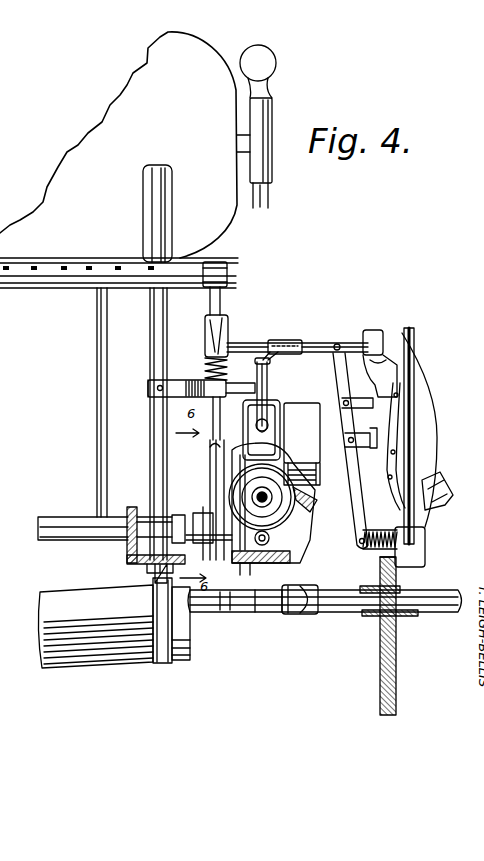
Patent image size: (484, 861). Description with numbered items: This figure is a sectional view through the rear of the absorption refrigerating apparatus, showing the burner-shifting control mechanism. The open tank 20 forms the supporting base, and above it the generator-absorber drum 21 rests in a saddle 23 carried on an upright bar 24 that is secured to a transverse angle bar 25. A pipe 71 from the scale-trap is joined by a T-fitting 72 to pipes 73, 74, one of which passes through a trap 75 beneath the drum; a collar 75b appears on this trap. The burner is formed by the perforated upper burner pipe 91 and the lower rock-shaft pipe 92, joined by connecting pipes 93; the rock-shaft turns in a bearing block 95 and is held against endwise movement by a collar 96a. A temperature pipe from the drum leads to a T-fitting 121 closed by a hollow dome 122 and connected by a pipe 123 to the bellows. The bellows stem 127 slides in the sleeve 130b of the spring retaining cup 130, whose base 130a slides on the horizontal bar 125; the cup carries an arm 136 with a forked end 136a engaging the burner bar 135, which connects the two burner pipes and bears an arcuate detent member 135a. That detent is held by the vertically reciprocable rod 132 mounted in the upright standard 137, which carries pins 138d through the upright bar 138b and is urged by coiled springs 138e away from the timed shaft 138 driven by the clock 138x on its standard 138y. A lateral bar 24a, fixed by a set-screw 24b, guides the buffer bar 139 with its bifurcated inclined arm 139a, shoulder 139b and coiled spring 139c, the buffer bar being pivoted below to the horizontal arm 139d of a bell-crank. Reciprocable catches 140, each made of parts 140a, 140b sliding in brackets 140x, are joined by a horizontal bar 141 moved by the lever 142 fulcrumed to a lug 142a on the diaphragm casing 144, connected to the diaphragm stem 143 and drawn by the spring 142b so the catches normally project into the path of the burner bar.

The open tank 20 is at (403, 669).
The generator-absorber drum 21 is at (125, 145).
The saddle 23 is at (143, 184).
The upright bar 24 is at (150, 298).
The laterally extending bar 24a is at (192, 383).
The set-screw 24b is at (130, 383).
The angle bar 25 is at (127, 557).
The pipe 71 is at (452, 600).
The T-fitting 72 is at (296, 614).
The pipe 73 is at (267, 612).
The pipe 74 is at (243, 612).
The trap 75 is at (35, 637).
The spindle collar 75b is at (158, 666).
The burner pipe 91 is at (60, 277).
The rock-shaft pipe 92 is at (53, 512).
The connecting pipe 93 is at (97, 318).
The bearing block 95 is at (143, 509).
The collar 96a is at (177, 520).
The T-fitting 121 is at (263, 107).
The hollow dome 122 is at (267, 67).
The pipe 123 is at (262, 193).
The horizontal bar 125 is at (270, 560).
The horizontal stem 127 is at (266, 500).
The spring retaining cup 130 is at (298, 512).
The cup base 130a is at (293, 563).
The sleeve 130b is at (285, 528).
The vertically reciprocable rod 132 is at (262, 342).
The burner bar 135 is at (230, 288).
The arcuate detent member 135a is at (300, 347).
The arm 136 is at (297, 490).
The forked end 136a is at (212, 446).
The upright standard 137 is at (270, 400).
The shaft 138 is at (302, 458).
The upright bar 138b is at (272, 408).
The horizontal pin 138d is at (257, 553).
The coiled spring 138e is at (258, 548).
The clock 138x is at (302, 433).
The standard 138y is at (330, 483).
The buffer bar 139 is at (190, 402).
The bifurcated inclined arm 139a is at (225, 320).
The shoulder 139b is at (210, 340).
The coiled spring 139c is at (207, 362).
The horizontal arm 139d is at (203, 530).
The reciprocable catch 140 is at (310, 335).
The catch part 140a is at (240, 345).
The catch part 140b is at (340, 345).
The bracket 140x is at (384, 360).
The horizontal bar 141 is at (344, 368).
The lever 142 is at (378, 345).
The lug 142a is at (398, 380).
The spring 142b is at (427, 467).
The stem 143 is at (412, 380).
The diaphragm casing 144 is at (438, 382).